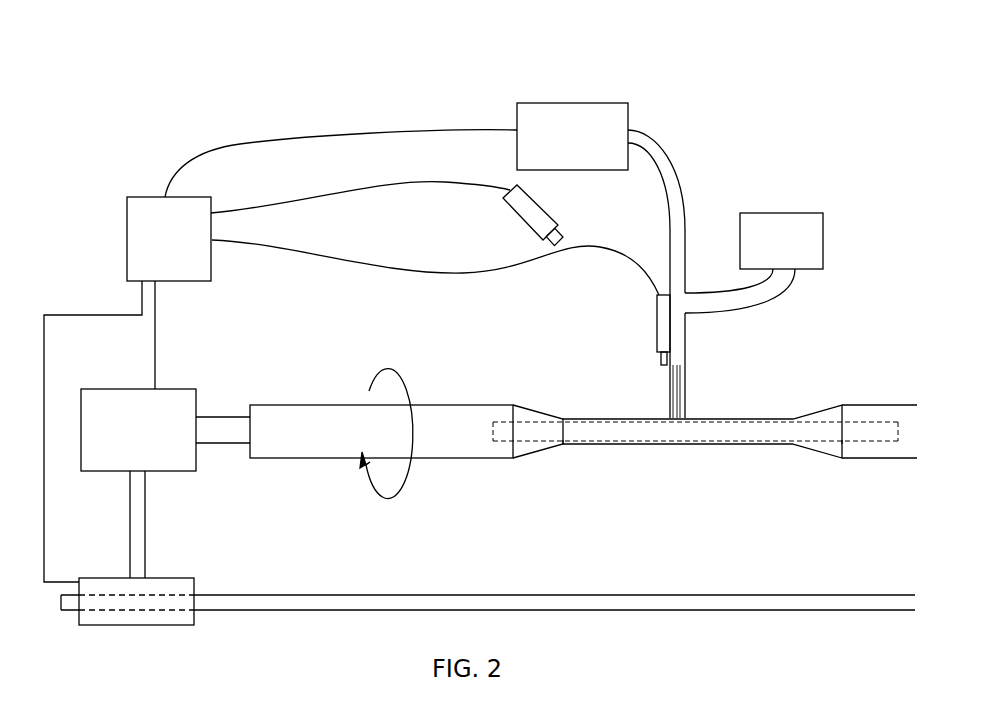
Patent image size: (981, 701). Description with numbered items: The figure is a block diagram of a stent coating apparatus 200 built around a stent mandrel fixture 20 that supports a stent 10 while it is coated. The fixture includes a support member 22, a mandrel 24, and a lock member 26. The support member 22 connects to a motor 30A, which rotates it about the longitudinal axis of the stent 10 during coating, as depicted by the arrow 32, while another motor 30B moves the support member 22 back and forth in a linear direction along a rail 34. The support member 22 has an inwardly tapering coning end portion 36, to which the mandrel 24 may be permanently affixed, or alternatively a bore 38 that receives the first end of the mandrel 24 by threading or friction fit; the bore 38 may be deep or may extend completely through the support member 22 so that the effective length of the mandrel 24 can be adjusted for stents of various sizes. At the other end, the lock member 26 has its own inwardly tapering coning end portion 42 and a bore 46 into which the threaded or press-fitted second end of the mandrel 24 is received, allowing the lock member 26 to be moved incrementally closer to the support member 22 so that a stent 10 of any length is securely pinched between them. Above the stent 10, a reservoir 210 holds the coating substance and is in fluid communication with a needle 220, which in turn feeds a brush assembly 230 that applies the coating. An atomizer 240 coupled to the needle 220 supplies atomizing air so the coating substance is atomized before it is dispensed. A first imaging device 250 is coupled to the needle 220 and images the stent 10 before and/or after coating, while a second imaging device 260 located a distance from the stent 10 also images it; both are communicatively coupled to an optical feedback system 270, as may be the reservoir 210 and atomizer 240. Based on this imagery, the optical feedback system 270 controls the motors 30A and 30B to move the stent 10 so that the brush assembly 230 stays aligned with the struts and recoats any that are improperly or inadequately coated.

The stent coating apparatus 200 is at (146, 60).
The reservoir 210 is at (573, 102).
The needle 220 is at (686, 323).
The brush assembly 230 is at (686, 368).
The atomizer 240 is at (780, 213).
The first imaging device 250 is at (655, 325).
The second imaging device 260 is at (545, 201).
The optical feedback system 270 is at (214, 197).
The motor 30A is at (122, 407).
The motor 30B is at (163, 585).
The arrow 32 is at (398, 378).
The support member 22 is at (428, 424).
The coning end portion 36 is at (532, 418).
The bore 38 is at (542, 441).
The stent 10 is at (728, 417).
The mandrel 24 is at (643, 422).
The coning end portion 42 is at (820, 415).
The lock member 26 is at (874, 410).
The bore 46 is at (837, 460).
The stent mandrel fixture 20 is at (580, 446).
The rail 34 is at (804, 600).